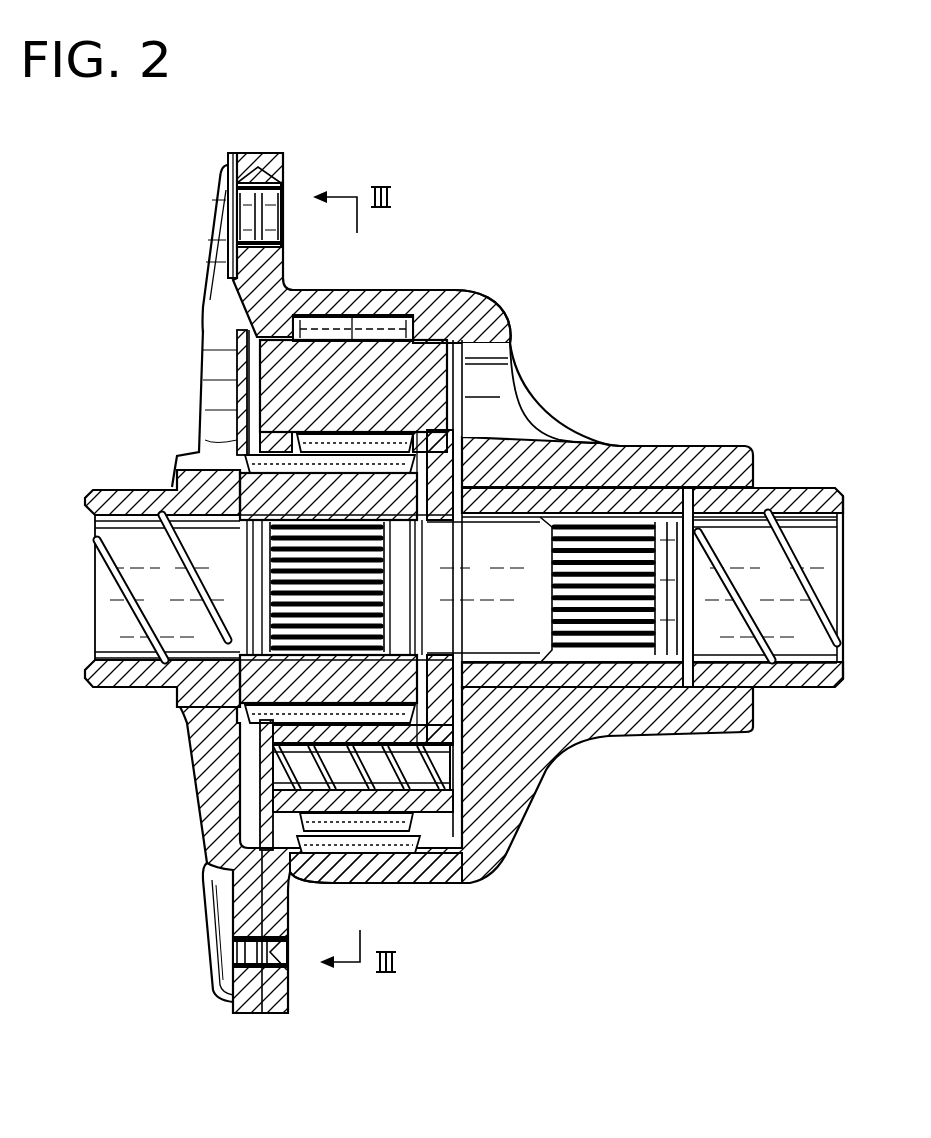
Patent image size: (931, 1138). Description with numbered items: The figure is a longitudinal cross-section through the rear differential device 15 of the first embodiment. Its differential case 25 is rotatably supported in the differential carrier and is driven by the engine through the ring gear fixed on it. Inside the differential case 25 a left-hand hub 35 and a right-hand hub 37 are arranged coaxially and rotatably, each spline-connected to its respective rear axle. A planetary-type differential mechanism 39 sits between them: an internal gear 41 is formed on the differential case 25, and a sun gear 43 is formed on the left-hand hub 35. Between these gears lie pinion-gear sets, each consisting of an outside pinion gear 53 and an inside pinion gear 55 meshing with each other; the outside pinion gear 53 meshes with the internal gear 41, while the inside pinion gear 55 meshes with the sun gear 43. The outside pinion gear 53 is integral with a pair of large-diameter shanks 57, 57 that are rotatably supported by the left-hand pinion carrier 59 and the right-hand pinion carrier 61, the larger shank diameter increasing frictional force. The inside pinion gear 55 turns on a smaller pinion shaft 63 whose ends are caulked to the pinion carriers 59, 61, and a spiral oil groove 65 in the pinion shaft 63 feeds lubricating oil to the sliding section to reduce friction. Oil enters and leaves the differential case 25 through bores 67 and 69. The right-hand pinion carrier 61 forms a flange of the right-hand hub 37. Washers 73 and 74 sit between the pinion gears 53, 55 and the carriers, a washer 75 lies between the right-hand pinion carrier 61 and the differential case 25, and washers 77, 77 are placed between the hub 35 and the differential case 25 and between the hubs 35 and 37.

The rear differential device 15 is at (562, 250).
The differential case 25 is at (257, 168).
The left-hand hub 35 is at (388, 511).
The right-hand hub 37 is at (617, 462).
The differential mechanism 39 is at (442, 245).
The internal gear 41 is at (393, 853).
The sun gear 43 is at (303, 465).
The outside pinion gear 53 is at (340, 445).
The inside pinion gear 55 is at (327, 832).
The large-diameter shank 57 is at (293, 406).
The left-hand pinion carrier 59 is at (218, 437).
The right-hand pinion carrier 61 is at (449, 467).
The pinion shaft 63 is at (260, 787).
The spiral oil groove 65 is at (260, 757).
The bore 67 is at (212, 383).
The bore 69 is at (503, 423).
The washer 73 is at (296, 327).
The washer 74 is at (277, 712).
The washer 75 is at (457, 423).
The washer 77 is at (218, 650).